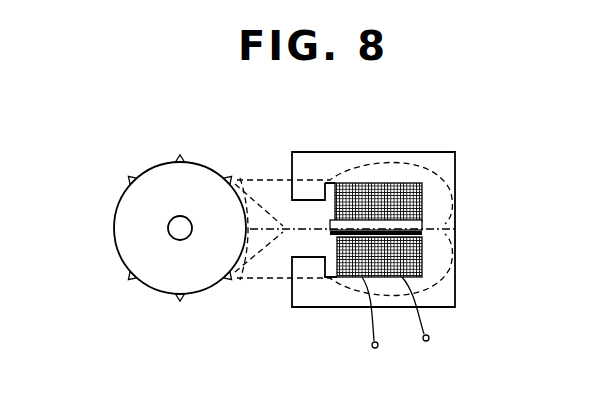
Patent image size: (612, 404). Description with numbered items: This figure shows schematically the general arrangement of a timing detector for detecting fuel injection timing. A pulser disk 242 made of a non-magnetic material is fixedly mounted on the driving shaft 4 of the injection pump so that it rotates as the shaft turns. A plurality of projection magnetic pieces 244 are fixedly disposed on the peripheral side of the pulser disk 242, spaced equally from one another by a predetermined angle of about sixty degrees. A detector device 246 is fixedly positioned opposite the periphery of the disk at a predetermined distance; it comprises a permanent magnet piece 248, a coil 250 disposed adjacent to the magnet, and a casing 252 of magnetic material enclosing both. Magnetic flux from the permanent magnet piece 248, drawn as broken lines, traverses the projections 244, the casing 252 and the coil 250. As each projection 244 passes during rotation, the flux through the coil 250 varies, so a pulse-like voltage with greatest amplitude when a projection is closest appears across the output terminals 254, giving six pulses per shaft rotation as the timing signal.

The driving shaft 4 is at (168, 229).
The pulser disk 242 is at (205, 277).
The projection magnetic pieces 244 is at (122, 181).
The detector device 246 is at (460, 200).
The permanent magnet piece 248 is at (530, 239).
The coil 250 is at (380, 188).
The casing 252 is at (443, 285).
The output terminals 254 is at (398, 340).